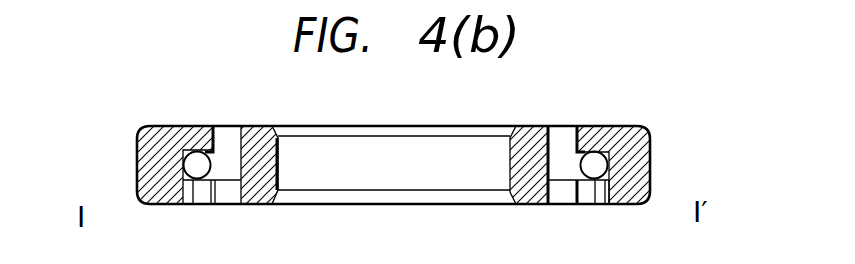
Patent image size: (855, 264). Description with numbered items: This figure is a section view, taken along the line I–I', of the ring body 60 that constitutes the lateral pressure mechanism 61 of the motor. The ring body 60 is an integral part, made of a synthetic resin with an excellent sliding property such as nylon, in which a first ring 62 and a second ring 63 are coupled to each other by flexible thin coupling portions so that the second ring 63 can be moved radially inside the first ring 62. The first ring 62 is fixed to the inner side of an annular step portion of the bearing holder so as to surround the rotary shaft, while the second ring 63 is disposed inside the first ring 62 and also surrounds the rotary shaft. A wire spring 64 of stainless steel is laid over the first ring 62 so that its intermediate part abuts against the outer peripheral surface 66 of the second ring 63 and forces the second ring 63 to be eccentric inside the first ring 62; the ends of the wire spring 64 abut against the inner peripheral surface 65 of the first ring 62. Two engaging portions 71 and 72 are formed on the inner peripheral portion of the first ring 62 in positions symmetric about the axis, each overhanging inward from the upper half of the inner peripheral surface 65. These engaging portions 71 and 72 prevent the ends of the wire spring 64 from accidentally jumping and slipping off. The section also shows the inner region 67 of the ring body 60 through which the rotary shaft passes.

The ring body 60 is at (749, 122).
The lateral pressure mechanism 61 is at (620, 100).
The first ring 62 is at (634, 171).
The second ring 63 is at (522, 128).
The wire spring 64 is at (592, 170).
The inner peripheral surface 65 is at (179, 167).
The outer peripheral surface 66 is at (237, 163).
The inner bore wall 67 is at (504, 166).
The engaging portion 71 is at (189, 127).
The engaging portion 72 is at (585, 128).